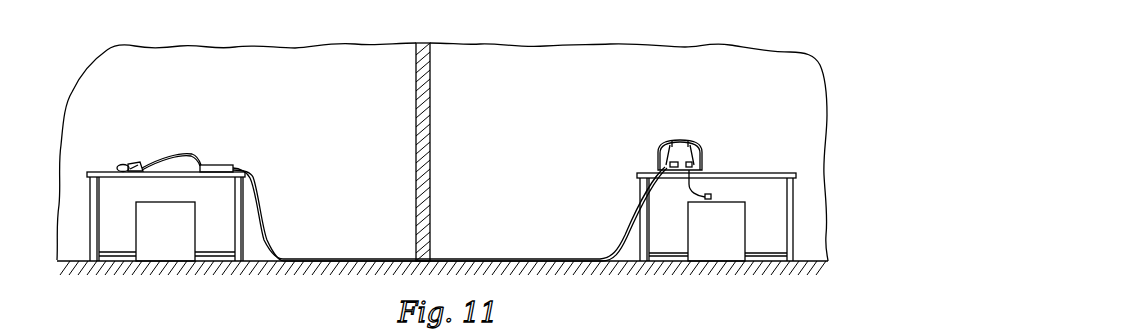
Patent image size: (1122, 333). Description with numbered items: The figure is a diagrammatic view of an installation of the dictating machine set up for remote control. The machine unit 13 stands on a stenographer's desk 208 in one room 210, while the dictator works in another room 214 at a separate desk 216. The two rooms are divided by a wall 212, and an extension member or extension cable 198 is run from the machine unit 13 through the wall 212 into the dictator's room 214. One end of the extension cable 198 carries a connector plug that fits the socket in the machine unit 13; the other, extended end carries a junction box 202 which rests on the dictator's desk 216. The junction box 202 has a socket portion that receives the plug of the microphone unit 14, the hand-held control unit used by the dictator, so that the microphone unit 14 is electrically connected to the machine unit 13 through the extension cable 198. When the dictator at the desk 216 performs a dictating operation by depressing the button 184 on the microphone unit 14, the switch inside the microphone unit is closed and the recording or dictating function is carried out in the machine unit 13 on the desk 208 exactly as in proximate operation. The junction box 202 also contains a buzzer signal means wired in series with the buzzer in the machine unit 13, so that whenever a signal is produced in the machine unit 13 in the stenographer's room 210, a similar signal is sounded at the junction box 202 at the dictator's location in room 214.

The room 214 is at (360, 54).
The room 210 is at (582, 62).
The wall 212 is at (430, 123).
The machine unit 13 is at (698, 138).
The stenographer's desk 208 is at (766, 173).
The extension member 198 is at (535, 258).
The desk 216 is at (225, 206).
The button 184 is at (118, 166).
The microphone unit 14 is at (141, 158).
The junction box 202 is at (217, 165).